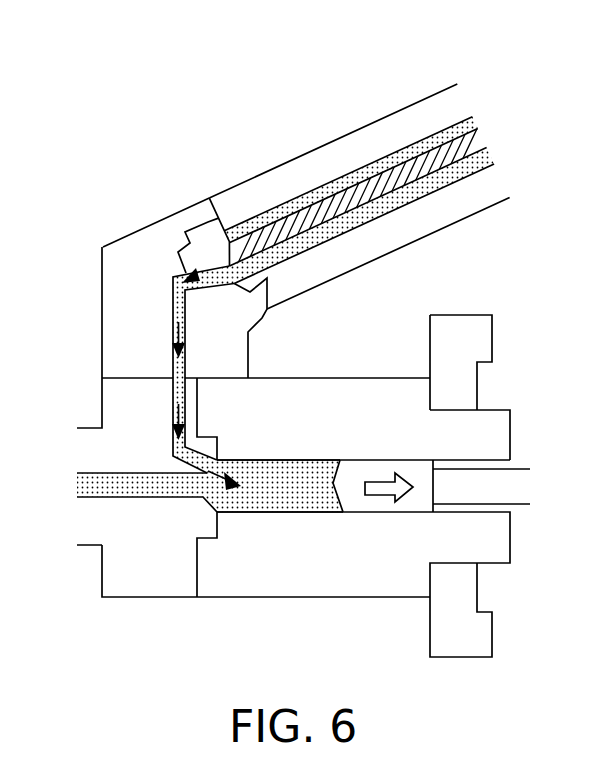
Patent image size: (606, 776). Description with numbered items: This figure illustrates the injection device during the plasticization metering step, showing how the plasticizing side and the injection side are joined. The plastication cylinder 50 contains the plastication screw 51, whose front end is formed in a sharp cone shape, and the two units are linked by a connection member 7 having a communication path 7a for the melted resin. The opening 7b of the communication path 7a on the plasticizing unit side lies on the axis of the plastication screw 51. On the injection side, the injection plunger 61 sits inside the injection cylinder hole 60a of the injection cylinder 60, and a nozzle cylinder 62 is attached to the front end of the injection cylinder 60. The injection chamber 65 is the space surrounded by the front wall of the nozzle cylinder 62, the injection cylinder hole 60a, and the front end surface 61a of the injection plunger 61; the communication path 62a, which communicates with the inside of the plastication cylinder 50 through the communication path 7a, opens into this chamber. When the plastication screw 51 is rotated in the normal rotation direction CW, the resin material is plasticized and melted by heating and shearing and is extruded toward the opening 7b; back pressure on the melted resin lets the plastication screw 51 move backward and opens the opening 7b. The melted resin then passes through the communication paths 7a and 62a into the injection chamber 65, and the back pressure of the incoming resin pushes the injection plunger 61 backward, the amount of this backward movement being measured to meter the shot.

The connection member 7 is at (150, 226).
The communication path 7a is at (172, 314).
The opening 7b is at (223, 240).
The plastication cylinder 50 is at (433, 115).
The plastication screw 51 is at (343, 197).
The normal rotation direction CW is at (416, 206).
The injection cylinder 60 is at (365, 572).
The injection cylinder hole 60a is at (270, 507).
The injection plunger 61 is at (390, 460).
The front end surface 61a is at (329, 460).
The nozzle cylinder 62 is at (152, 572).
The communication path 62a is at (172, 412).
The injection chamber 65 is at (290, 490).